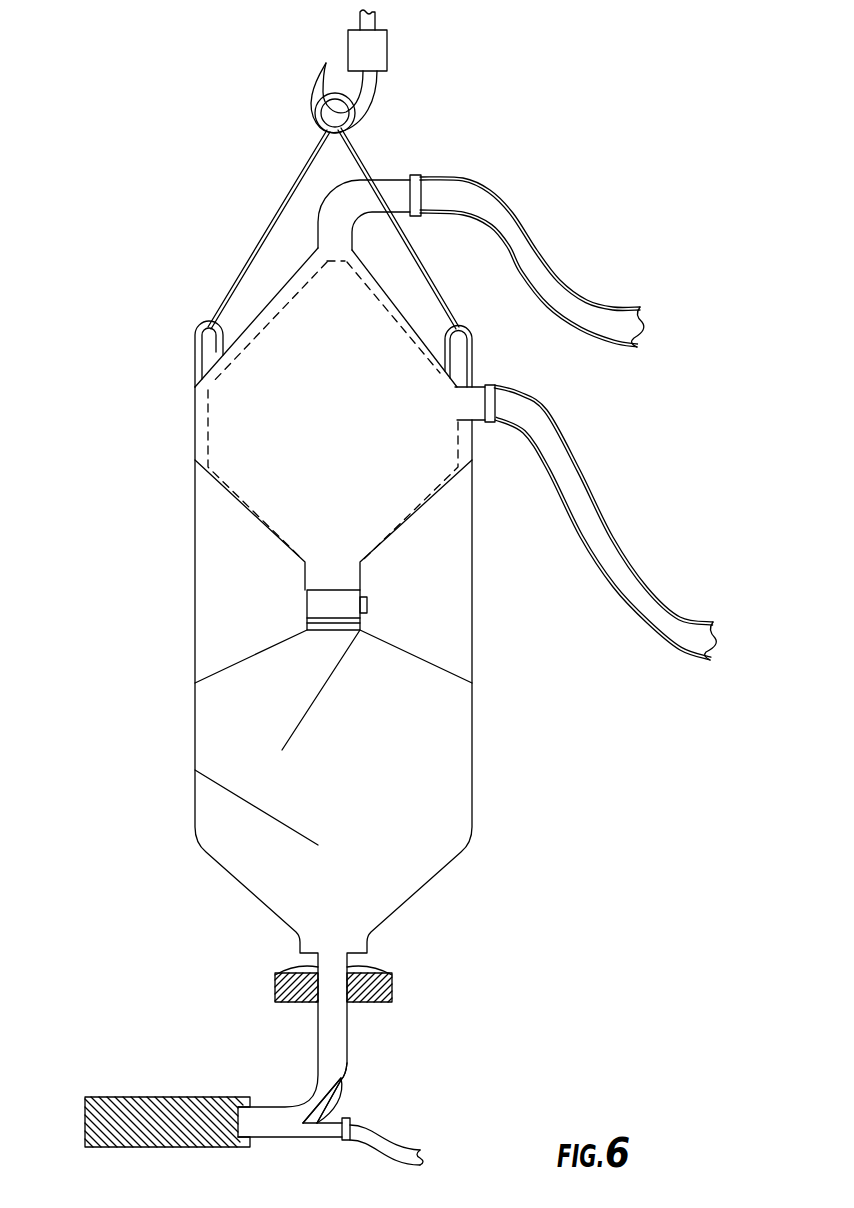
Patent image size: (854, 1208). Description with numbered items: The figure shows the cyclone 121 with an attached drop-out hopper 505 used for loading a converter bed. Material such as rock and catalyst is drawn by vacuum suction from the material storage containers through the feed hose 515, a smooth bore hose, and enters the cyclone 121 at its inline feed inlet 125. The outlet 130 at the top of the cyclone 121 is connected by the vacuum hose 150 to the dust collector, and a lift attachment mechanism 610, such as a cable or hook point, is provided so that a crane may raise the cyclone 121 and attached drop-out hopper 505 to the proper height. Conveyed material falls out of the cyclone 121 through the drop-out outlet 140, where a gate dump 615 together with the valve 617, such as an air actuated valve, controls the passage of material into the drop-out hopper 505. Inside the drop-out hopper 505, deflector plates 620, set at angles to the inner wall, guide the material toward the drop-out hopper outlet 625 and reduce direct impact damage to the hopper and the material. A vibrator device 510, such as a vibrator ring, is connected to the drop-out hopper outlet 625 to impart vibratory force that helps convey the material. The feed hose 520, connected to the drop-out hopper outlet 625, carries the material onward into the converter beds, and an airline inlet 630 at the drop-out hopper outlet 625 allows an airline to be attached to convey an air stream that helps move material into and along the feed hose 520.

The cyclone 121 is at (184, 411).
The inline feed inlet 125 is at (500, 406).
The outlet 130 is at (325, 200).
The drop-out outlet 140 is at (300, 578).
The vacuum hose 150 is at (553, 247).
The drop-out hopper 505 is at (480, 753).
The vibrator device 510 is at (275, 992).
The feed hose 515 is at (645, 593).
The feed hose 520 is at (165, 1147).
The lift attachment mechanism 610 is at (353, 128).
The gate dump 615 is at (333, 590).
The valve 617 is at (366, 598).
The deflector plates 620 is at (300, 718).
The drop-out hopper outlet 625 is at (350, 1063).
The airline inlet 630 is at (380, 1140).